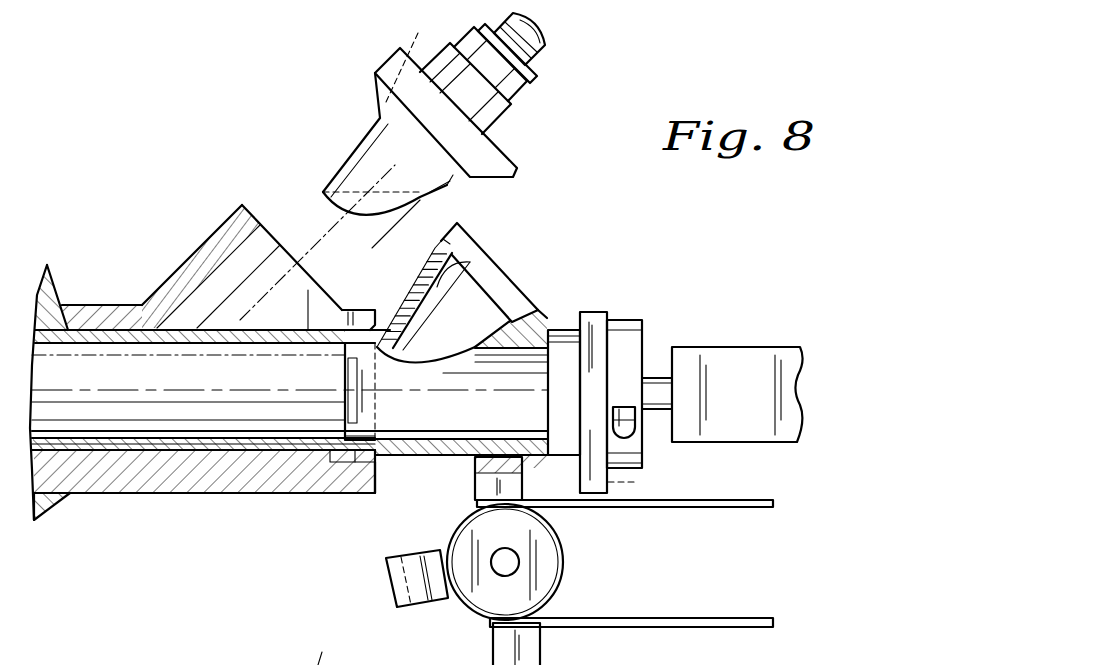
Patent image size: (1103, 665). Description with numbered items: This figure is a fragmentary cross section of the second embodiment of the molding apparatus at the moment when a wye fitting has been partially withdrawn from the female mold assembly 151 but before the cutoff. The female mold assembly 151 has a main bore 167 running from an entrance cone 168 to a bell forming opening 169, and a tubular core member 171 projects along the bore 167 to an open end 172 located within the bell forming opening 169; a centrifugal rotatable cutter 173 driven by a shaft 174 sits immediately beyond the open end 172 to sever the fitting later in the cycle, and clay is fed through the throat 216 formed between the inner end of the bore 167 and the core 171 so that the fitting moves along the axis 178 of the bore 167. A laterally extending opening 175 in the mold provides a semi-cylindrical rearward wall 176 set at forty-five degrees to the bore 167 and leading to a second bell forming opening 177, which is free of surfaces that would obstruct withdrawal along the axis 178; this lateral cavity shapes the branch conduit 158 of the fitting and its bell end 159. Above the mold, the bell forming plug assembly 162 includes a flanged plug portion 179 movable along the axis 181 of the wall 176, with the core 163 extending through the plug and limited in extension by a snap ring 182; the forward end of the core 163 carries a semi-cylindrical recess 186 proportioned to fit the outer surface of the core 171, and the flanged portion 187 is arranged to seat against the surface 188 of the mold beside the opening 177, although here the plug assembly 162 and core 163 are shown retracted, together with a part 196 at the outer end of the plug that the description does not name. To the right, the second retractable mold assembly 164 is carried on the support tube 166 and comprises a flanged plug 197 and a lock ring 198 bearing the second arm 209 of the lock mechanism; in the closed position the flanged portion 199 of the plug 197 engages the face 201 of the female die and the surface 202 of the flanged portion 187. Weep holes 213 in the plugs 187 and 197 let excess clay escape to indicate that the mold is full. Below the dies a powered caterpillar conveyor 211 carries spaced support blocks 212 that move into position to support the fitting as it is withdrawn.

The female mold assembly 151 is at (215, 493).
The branch conduit 158 is at (487, 265).
The bell end 159 is at (470, 237).
The bell forming plug assembly 162 is at (515, 148).
The core 163 is at (355, 152).
The second retractable mold assembly 164 is at (650, 330).
The support tube 166 is at (762, 357).
The main bore 167 is at (130, 448).
The entrance cone 168 is at (58, 458).
The bell forming opening 169 is at (360, 462).
The tubular core member 171 is at (258, 428).
The open end 172 is at (367, 440).
The centrifugal rotatable cutter 173 is at (358, 372).
The shaft 174 is at (363, 390).
The laterally extending opening 175 is at (262, 282).
The semi-cylindrical rearward wall 176 is at (200, 293).
The bell forming opening 177 is at (255, 228).
The axis 178 is at (218, 392).
The flanged plug portion 179 is at (487, 125).
The axis 181 is at (317, 248).
The snap ring 182 is at (533, 83).
The semi-cylindrical recess 186 is at (415, 203).
The flanged portion 187 is at (378, 68).
The surface 188 is at (244, 207).
The nut 196 is at (533, 43).
The flanged plug 197 is at (595, 312).
The lock ring 198 is at (622, 327).
The flanged portion 199 is at (580, 388).
The face 201 is at (383, 492).
The surface 202 is at (518, 175).
The second arm 209 is at (635, 422).
The powered caterpillar conveyor 211 is at (700, 627).
The spaced support blocks 212 is at (475, 487).
The weep holes 213 is at (501, 338).
The throat 216 is at (103, 450).